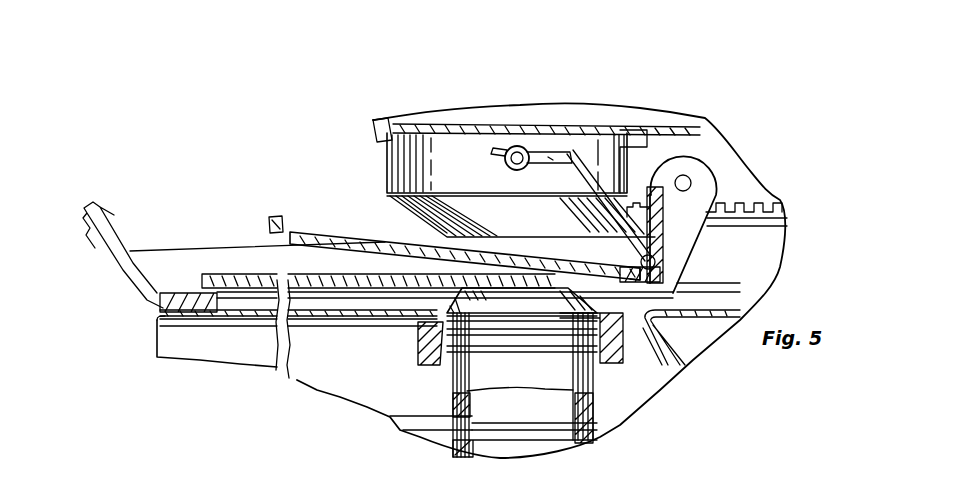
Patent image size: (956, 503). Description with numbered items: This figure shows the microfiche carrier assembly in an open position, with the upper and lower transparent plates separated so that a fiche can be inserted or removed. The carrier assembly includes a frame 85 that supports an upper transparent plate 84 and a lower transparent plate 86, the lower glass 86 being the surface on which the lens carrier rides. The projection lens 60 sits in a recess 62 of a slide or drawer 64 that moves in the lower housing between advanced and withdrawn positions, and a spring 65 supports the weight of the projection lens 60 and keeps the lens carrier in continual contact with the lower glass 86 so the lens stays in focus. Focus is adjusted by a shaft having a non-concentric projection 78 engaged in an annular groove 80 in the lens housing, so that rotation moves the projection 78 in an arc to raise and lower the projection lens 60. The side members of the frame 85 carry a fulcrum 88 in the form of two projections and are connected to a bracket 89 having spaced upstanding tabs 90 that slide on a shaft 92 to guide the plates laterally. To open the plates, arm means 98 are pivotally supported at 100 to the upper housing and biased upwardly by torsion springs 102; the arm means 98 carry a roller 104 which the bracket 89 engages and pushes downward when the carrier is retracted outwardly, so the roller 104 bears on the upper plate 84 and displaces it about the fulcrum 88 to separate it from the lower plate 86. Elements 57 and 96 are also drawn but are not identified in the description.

The housing 57 is at (392, 200).
The projection lens 60 is at (447, 376).
The recess 62 is at (420, 343).
The slide or drawer 64 is at (328, 371).
The spring 65 is at (545, 360).
The non-concentric projection 78 is at (490, 416).
The annular groove 80 is at (585, 426).
The upper transparent plate 84 is at (277, 217).
The frame 85 is at (138, 268).
The lower transparent plate 86 is at (240, 277).
The fulcrum 88 is at (550, 252).
The bracket 89 is at (687, 265).
The upstanding tabs 90 is at (680, 240).
The shaft 92 is at (692, 182).
The ratchet teeth 96 is at (757, 202).
The arm means 98 is at (590, 165).
The pivot 100 is at (533, 155).
The torsion springs 102 is at (503, 152).
The roller 104 is at (627, 257).